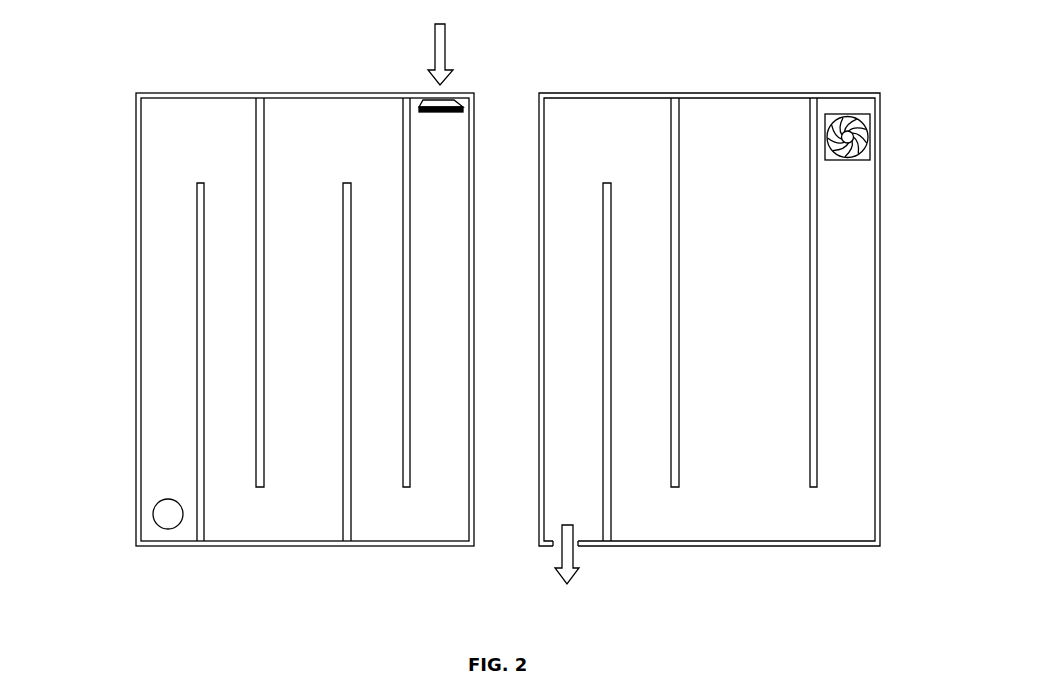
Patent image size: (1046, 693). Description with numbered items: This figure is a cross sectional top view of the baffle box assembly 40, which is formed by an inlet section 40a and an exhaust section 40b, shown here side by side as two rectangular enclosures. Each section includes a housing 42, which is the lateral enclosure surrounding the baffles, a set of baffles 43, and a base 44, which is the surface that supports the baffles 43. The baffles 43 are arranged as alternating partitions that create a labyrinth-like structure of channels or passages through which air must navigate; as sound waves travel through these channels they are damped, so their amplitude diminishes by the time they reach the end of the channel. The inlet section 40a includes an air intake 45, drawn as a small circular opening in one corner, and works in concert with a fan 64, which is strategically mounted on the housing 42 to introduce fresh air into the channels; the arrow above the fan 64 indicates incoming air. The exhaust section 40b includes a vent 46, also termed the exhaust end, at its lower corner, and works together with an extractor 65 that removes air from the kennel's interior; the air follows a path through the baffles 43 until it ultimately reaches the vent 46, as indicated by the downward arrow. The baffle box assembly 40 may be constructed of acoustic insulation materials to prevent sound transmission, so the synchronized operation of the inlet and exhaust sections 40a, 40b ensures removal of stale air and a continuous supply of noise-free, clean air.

The baffle box assembly 40 is at (104, 155).
The inlet section 40a is at (190, 93).
The exhaust section 40b is at (712, 92).
The housing 42 is at (880, 320).
The baffles 43 is at (256, 137).
The base 44 is at (601, 122).
The air intake 45 is at (165, 512).
The vent 46 is at (553, 547).
The fan 64 is at (425, 100).
The extractor 65 is at (866, 135).